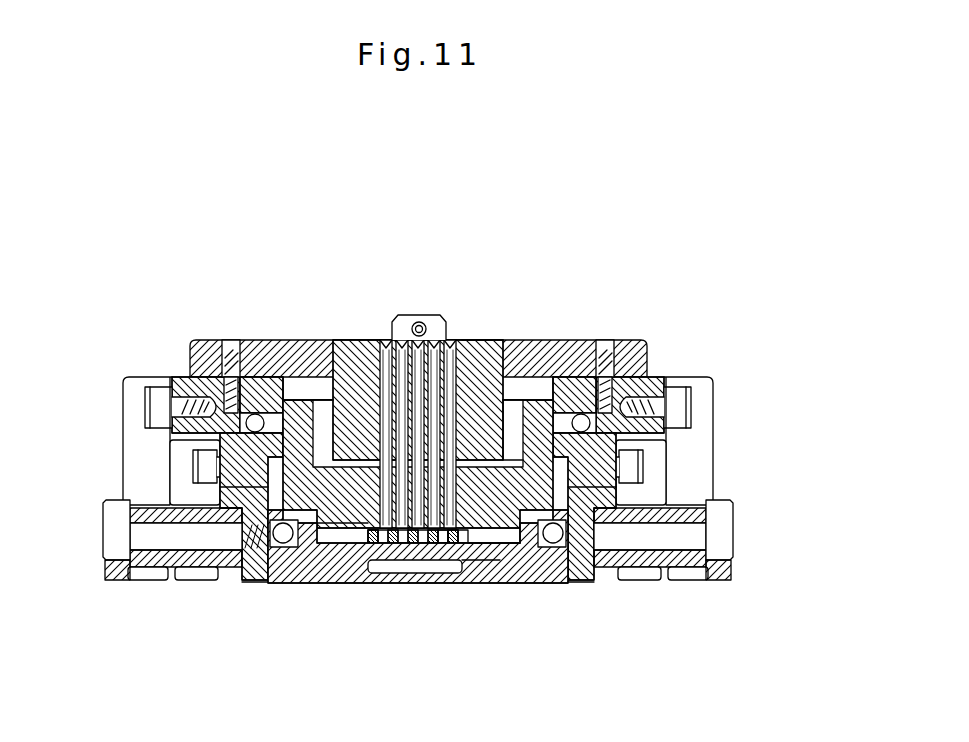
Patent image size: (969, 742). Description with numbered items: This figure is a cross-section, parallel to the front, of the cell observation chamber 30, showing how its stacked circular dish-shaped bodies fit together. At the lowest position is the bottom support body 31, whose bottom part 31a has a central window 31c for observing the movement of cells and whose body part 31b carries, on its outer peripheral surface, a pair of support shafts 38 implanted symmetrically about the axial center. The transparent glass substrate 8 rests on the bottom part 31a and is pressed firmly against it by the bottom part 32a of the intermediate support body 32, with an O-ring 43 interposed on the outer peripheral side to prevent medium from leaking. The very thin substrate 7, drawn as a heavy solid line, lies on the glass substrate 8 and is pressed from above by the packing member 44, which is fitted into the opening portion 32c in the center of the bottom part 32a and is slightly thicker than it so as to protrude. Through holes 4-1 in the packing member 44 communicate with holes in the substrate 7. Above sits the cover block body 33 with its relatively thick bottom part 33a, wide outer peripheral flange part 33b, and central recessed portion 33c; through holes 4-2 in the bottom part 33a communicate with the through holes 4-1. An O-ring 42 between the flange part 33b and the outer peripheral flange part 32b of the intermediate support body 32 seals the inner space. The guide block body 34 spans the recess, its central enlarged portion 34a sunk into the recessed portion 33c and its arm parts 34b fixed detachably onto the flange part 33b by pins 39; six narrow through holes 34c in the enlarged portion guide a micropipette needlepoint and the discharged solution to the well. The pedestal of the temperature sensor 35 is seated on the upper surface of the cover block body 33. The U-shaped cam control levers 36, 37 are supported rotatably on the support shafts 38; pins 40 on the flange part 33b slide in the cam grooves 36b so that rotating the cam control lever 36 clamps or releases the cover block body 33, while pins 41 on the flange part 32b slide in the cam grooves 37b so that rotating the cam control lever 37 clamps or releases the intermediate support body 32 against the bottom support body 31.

The cell observation chamber 30 is at (421, 412).
The bottom support body 31 is at (444, 585).
The bottom part of bottom support body 31a is at (524, 590).
The body part of bottom support body 31b is at (230, 578).
The window 31c is at (490, 594).
The intermediate support body 32 is at (418, 532).
The bottom part of intermediate support body 32a is at (307, 599).
The outer peripheral flange part of intermediate support body 32b is at (612, 575).
The opening portion 32c is at (360, 574).
The cover block body 33 is at (418, 314).
The bottom part of cover block body 33a is at (527, 599).
The outer peripheral flange part of cover block body 33b is at (424, 366).
The central recessed portion 33c is at (510, 375).
The guide block body 34 is at (418, 393).
The central enlarged portion 34a is at (406, 336).
The arm parts 34b is at (422, 333).
The through holes 34c is at (472, 300).
The temperature sensor 35 is at (419, 283).
The cam control lever 36 is at (721, 441).
The cam grooves 36b is at (129, 420).
The cam control lever 37 is at (698, 472).
The cam grooves 37b is at (144, 472).
The support shafts 38 is at (421, 540).
The pins 39 is at (415, 349).
The pins 40 is at (420, 405).
The pins 41 is at (417, 453).
The O-ring 42 is at (418, 359).
The O-ring 43 is at (488, 618).
The packing member 44 is at (418, 592).
The substrate 7 is at (418, 509).
The glass substrate 8 is at (441, 578).
The through holes 4-1 is at (469, 603).
The through holes 4-2 is at (347, 590).